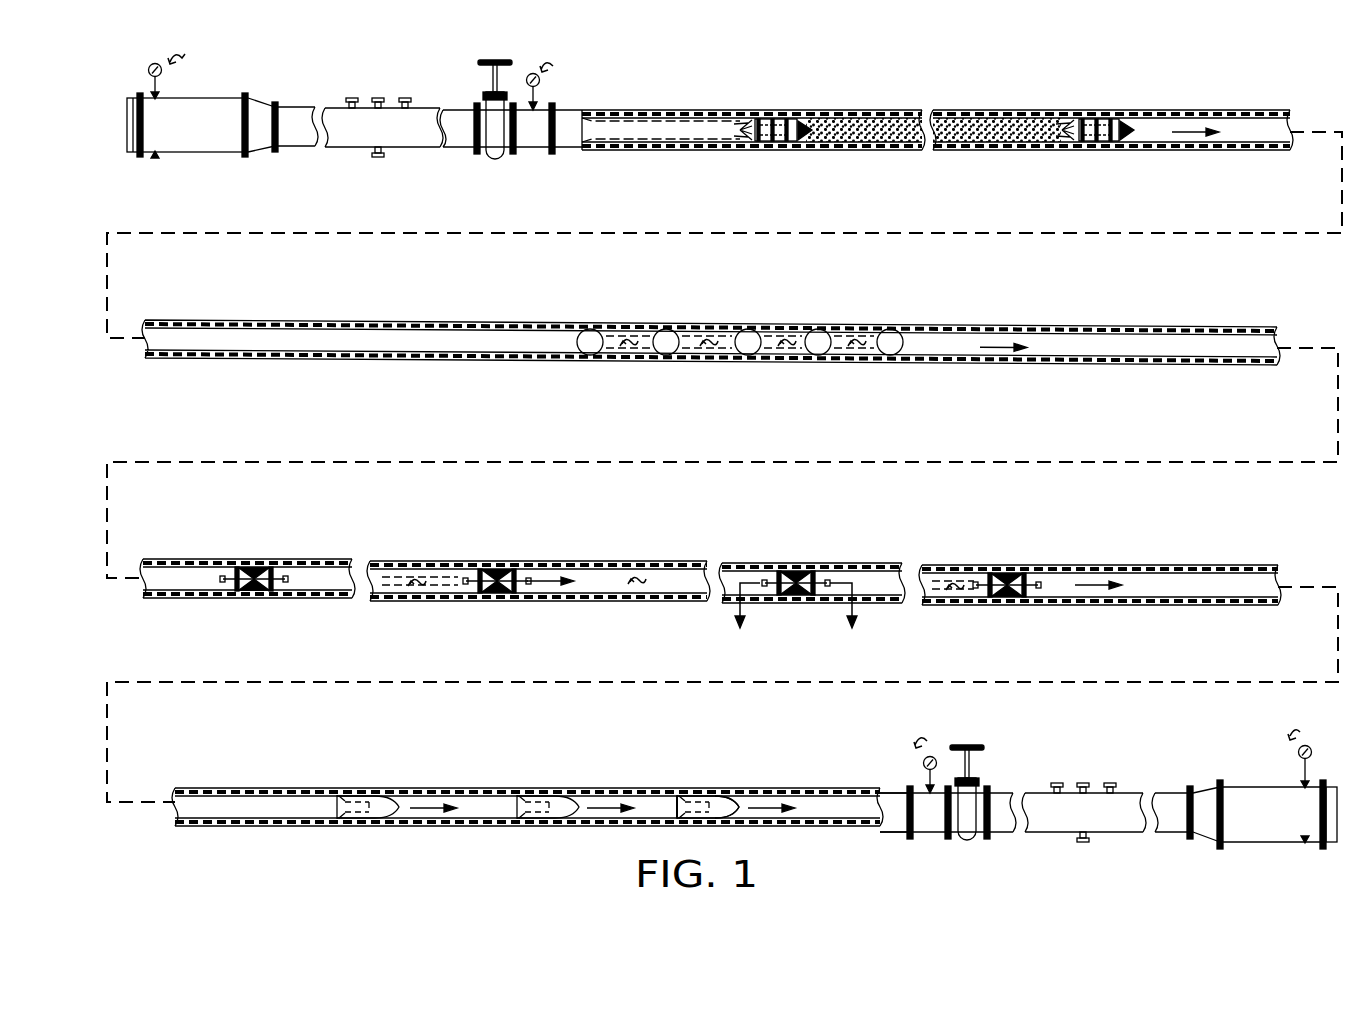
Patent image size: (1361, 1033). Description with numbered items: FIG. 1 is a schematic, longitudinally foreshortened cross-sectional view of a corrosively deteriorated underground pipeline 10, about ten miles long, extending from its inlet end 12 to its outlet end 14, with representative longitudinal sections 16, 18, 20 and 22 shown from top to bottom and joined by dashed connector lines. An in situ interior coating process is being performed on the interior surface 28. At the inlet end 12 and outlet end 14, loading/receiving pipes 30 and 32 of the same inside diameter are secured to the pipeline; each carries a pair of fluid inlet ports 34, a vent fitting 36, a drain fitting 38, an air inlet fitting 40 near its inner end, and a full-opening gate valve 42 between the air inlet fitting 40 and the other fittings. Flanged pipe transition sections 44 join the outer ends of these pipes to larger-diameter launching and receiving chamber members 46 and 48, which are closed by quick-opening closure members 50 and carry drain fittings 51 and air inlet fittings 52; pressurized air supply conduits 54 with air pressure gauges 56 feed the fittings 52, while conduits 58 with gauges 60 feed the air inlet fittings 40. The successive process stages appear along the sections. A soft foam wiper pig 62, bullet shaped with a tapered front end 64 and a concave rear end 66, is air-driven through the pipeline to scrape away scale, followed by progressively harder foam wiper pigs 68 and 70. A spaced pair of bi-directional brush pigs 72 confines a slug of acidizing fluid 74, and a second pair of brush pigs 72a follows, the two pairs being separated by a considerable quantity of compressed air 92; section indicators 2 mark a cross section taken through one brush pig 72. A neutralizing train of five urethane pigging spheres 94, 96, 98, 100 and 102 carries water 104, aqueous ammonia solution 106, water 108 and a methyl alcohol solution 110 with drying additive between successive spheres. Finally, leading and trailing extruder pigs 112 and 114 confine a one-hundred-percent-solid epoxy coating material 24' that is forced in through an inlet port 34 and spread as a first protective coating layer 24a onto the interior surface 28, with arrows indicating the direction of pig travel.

The pipeline 10 is at (978, 103).
The inlet end 12 is at (932, 121).
The outlet end 14 is at (894, 833).
The longitudinal section 16 is at (1058, 152).
The longitudinal section 18 is at (711, 342).
The longitudinal section 20 is at (710, 585).
The longitudinal section 22 is at (527, 827).
The first protective coating layer 24a is at (668, 116).
The epoxy coating material 24' is at (933, 108).
The interior surface 28 is at (694, 143).
The loading/receiving pipe 30 is at (430, 150).
The loading/receiving pipe 32 is at (1118, 836).
The fluid inlet ports 34 is at (352, 98).
The vent fitting 36 is at (378, 98).
The drain fitting 38 is at (378, 157).
The air inlet fitting 40 is at (536, 106).
The full-opening gate valve 42 is at (484, 88).
The flanged pipe transition sections 44 is at (262, 100).
The launching chamber member 46 is at (229, 101).
The receiving chamber member 48 is at (1256, 842).
The quick-opening closure members 50 is at (128, 152).
The drain fittings 51 is at (155, 158).
The air inlet fittings 52 is at (162, 94).
The pressurized air supply conduits 54 is at (185, 56).
The air pressure gauges 56 is at (148, 71).
The pressurized air supply conduits 58 is at (541, 68).
The air pressure gauges 60 is at (540, 82).
The first foam wiper pig 62 is at (691, 798).
The tapered front end 64 is at (738, 798).
The concave rear end 66 is at (670, 808).
The second foam wiper pig 68 is at (541, 796).
The third foam wiper pig 70 is at (369, 796).
The bi-directional brush pigs 72 is at (804, 568).
The second pair of bi-directional brush pigs 72a is at (281, 568).
The acidizing fluid 74 is at (414, 579).
The compressed air 92 is at (639, 578).
The pigging sphere 94 is at (896, 328).
The pigging sphere 96 is at (824, 328).
The pigging sphere 98 is at (754, 328).
The pigging sphere 100 is at (672, 328).
The pigging sphere 102 is at (592, 328).
The water 104 is at (857, 360).
The aqueous ammonia solution 106 is at (782, 360).
The water 108 is at (707, 360).
The methyl alcohol solution 110 is at (627, 360).
The leading extruder pig 112 is at (1151, 126).
The trailing extruder pig 114 is at (806, 116).
The section line 2 is at (794, 623).